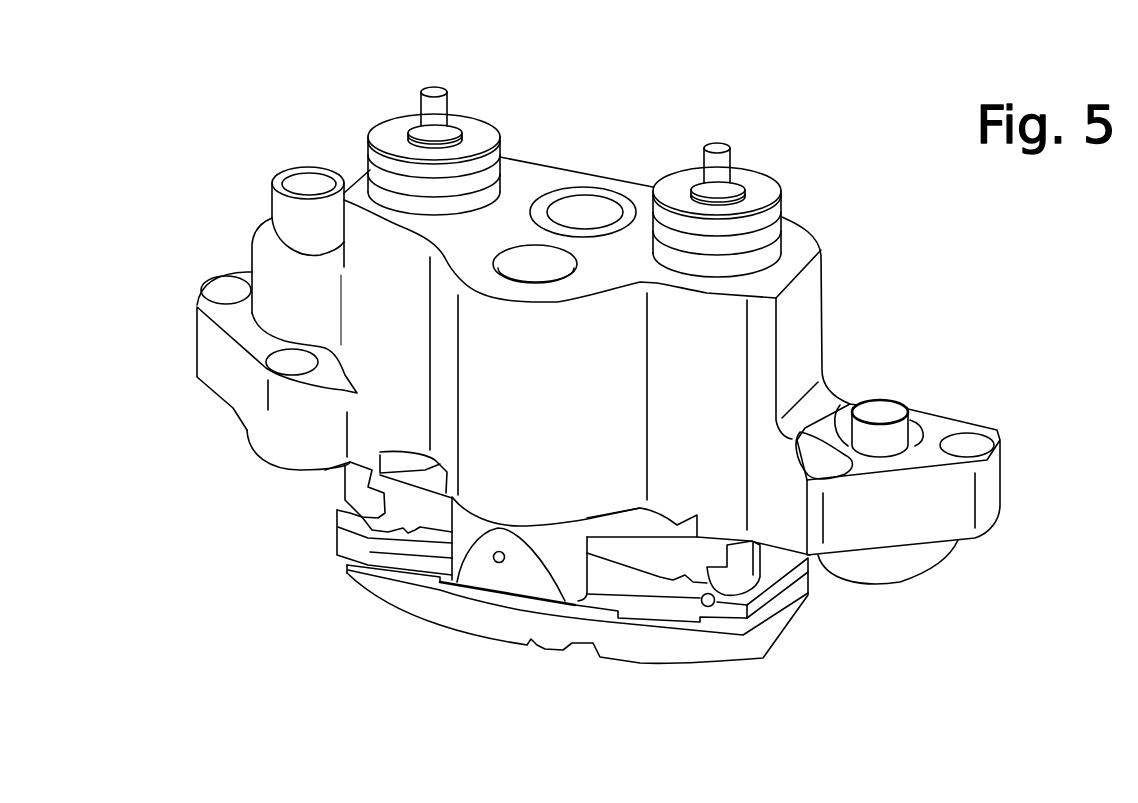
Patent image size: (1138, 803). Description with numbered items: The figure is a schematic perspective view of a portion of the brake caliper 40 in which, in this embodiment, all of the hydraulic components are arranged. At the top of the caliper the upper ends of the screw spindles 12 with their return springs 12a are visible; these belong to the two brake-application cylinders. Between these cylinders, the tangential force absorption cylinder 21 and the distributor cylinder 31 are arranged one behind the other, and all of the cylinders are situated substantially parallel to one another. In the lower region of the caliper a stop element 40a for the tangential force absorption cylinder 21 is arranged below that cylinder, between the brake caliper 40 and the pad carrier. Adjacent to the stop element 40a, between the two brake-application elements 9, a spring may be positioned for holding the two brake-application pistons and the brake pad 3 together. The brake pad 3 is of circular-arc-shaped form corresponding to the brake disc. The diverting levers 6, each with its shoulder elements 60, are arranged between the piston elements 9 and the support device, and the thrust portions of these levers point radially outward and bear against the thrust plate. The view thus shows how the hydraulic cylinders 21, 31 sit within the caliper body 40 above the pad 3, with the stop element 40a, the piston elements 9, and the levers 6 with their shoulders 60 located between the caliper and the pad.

The brake pad 3 is at (622, 638).
The diverting levers 6 is at (420, 503).
The brake-application elements 9 is at (670, 518).
The screw spindles 12 is at (437, 115).
The return springs 12a is at (767, 250).
The tangential force absorption cylinder 21 is at (530, 272).
The distributor cylinder 31 is at (630, 217).
The brake caliper 40 is at (807, 343).
The stop element 40a is at (495, 562).
The shoulder elements 60 is at (352, 478).